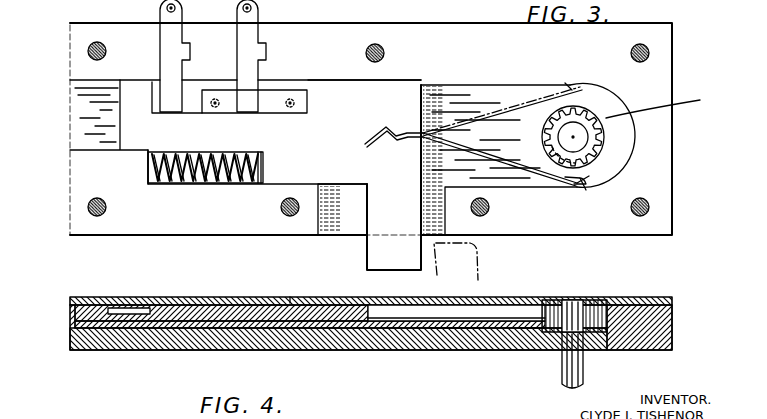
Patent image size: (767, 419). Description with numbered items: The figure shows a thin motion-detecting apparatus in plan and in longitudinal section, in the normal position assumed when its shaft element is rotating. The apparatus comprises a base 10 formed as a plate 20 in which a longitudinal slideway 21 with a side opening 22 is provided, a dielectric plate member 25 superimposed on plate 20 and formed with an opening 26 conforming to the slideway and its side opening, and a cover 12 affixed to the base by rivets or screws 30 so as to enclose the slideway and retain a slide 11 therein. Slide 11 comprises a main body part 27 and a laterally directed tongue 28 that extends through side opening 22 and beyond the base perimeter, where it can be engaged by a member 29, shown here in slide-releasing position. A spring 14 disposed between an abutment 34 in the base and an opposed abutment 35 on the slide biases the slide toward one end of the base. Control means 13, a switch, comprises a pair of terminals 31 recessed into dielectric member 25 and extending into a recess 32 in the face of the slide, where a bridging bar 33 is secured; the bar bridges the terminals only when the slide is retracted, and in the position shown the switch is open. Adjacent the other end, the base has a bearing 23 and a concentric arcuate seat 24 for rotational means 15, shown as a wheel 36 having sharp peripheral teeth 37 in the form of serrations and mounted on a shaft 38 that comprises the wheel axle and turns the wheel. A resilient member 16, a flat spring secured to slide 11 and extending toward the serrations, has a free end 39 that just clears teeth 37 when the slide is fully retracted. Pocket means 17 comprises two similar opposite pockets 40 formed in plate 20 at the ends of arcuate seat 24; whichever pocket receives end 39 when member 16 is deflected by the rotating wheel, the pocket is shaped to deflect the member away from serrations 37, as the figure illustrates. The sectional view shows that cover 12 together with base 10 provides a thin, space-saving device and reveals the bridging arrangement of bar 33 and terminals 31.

In FIG. 3, the base 10 is at (106, 243).
In FIG. 4, the base 10 is at (85, 362).
In FIG. 3, the slide 11 is at (436, 93).
In FIG. 4, the slide 11 is at (63, 323).
In FIG. 3, the cover 12 is at (177, 56).
In FIG. 4, the cover 12 is at (290, 300).
In FIG. 3, the control means 13 is at (268, 35).
In FIG. 3, the spring 14 is at (212, 184).
In FIG. 3, the rotational means 15 is at (598, 101).
In FIG. 4, the rotational means 15 is at (603, 299).
In FIG. 3, the resilient member 16 is at (486, 156).
In FIG. 4, the resilient member 16 is at (435, 322).
In FIG. 3, the cavity or pocket means 17 is at (598, 181).
In FIG. 4, the plate 20 is at (332, 351).
In FIG. 4, the slideway 21 is at (478, 351).
In FIG. 3, the side opening 22 is at (348, 230).
In FIG. 4, the bearing 23 is at (538, 351).
In FIG. 3, the arcuate seat 24 is at (661, 106).
In FIG. 3, the dielectric plate member 25 is at (655, 82).
In FIG. 4, the dielectric plate member 25 is at (674, 313).
In FIG. 3, the opening 26 is at (492, 93).
In FIG. 3, the main body part 27 is at (337, 96).
In FIG. 3, the tongue 28 is at (385, 258).
In FIG. 3, the member 29 is at (480, 259).
In FIG. 3, the rivets or screws 30 is at (86, 53).
In FIG. 3, the terminals 31 is at (243, 103).
In FIG. 4, the terminals 31 is at (180, 307).
In FIG. 3, the recess 32 is at (152, 106).
In FIG. 4, the recess 32 is at (136, 310).
In FIG. 3, the bridging bar 33 is at (298, 108).
In FIG. 4, the bridging bar 33 is at (185, 325).
In FIG. 3, the abutment 34 is at (150, 166).
In FIG. 3, the abutment 35 is at (266, 166).
In FIG. 3, the wheel 36 is at (600, 141).
In FIG. 3, the peripheral teeth 37 is at (546, 145).
In FIG. 4, the peripheral teeth 37 is at (560, 310).
In FIG. 4, the shaft 38 is at (585, 377).
In FIG. 3, the free end 39 is at (575, 187).
In FIG. 3, the pockets 40 is at (565, 83).